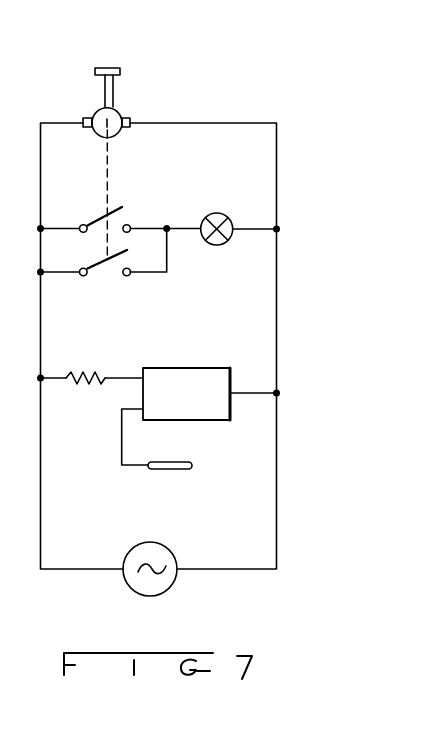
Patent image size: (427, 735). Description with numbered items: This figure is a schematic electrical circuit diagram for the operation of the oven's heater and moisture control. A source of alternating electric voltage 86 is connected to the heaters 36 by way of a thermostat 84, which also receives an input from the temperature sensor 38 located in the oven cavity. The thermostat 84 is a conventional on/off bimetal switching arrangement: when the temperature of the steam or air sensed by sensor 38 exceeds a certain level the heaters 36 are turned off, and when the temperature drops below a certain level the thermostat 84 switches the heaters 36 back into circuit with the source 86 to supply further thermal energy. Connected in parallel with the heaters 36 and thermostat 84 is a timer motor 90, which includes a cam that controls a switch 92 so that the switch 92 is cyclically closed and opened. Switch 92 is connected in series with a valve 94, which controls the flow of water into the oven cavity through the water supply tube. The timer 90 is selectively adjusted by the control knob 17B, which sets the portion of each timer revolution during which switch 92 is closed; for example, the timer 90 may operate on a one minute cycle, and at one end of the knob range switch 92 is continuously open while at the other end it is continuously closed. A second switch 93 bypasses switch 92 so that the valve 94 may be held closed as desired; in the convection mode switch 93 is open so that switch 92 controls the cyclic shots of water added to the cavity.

The control knob 17B is at (118, 67).
The timer motor 90 is at (115, 110).
The switch 92 is at (121, 206).
The switch 93 is at (108, 258).
The valve 94 is at (215, 213).
The heaters 36 is at (90, 373).
The thermostat 84 is at (205, 368).
The sensor 38 is at (177, 469).
The source of alternating electric voltage 86 is at (145, 542).